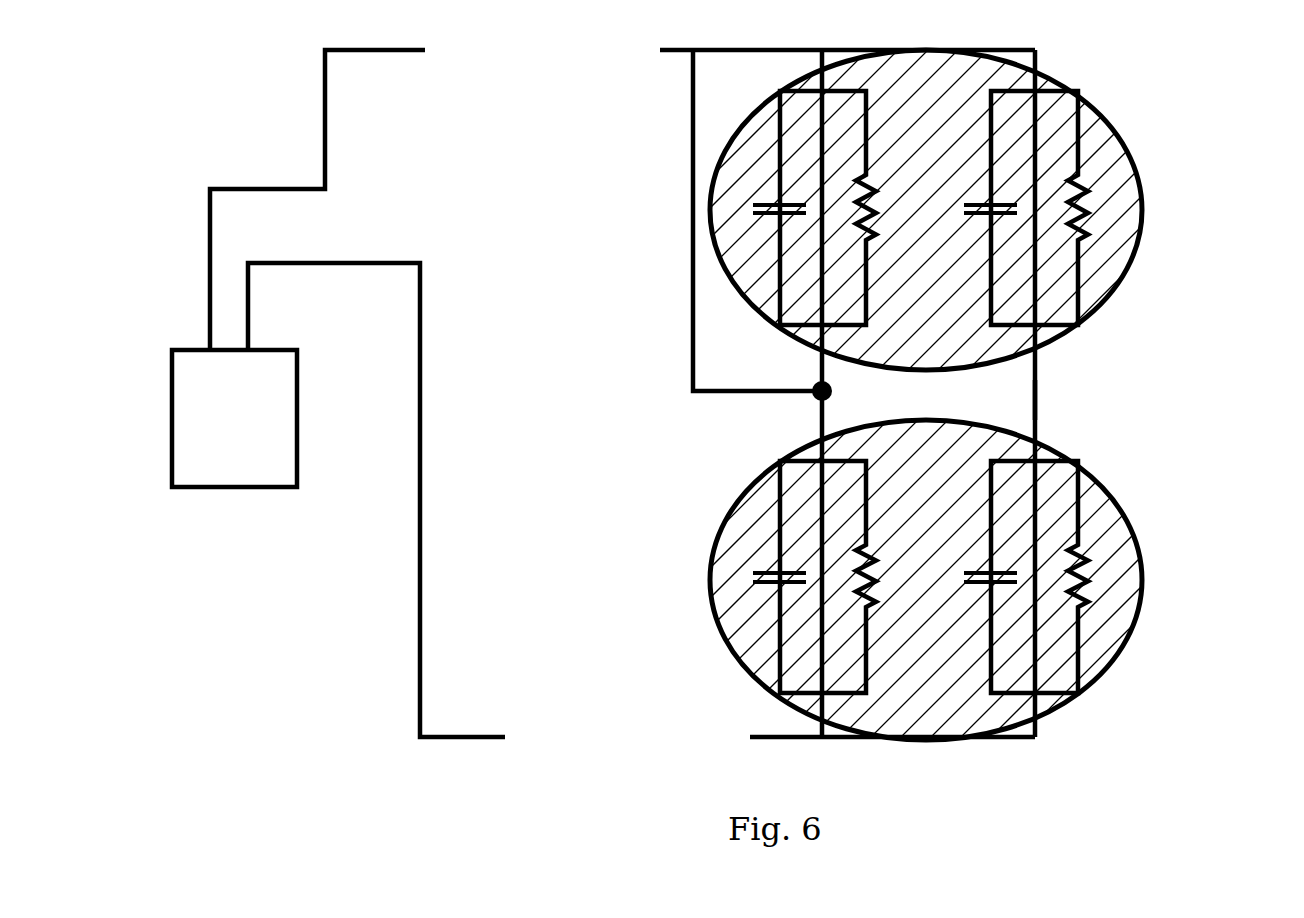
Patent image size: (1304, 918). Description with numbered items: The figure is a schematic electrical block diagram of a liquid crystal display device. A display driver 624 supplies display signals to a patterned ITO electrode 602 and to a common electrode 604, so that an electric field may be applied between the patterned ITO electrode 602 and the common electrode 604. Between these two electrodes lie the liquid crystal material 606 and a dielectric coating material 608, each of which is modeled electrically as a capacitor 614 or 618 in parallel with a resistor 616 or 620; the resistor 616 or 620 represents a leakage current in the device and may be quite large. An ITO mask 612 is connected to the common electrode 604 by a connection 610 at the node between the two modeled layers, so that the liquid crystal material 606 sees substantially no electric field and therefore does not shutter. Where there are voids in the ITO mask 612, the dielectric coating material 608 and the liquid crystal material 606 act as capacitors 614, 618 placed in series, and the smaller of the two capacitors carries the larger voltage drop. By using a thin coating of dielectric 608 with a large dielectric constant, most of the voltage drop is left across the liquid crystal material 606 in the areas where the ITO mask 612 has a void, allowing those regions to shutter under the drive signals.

The patterned ITO electrode 602 is at (610, 752).
The common electrode 604 is at (530, 70).
The liquid crystal material 606 is at (1130, 208).
The dielectric coating material 608 is at (1130, 580).
The electrode connection line 610 is at (1052, 397).
The ITO mask 612 is at (808, 402).
The capacitor 614 is at (780, 262).
The resistor 616 is at (1076, 133).
The capacitor 618 is at (780, 632).
The resistor 620 is at (1078, 645).
The display driver 624 is at (234, 418).